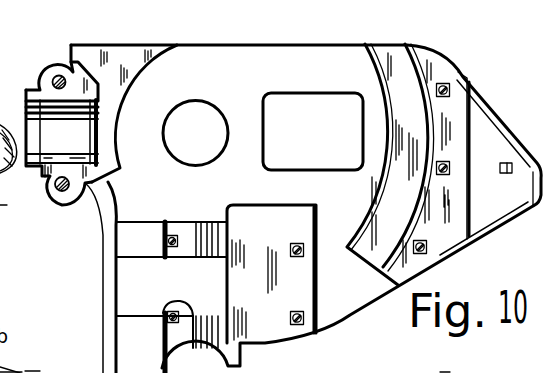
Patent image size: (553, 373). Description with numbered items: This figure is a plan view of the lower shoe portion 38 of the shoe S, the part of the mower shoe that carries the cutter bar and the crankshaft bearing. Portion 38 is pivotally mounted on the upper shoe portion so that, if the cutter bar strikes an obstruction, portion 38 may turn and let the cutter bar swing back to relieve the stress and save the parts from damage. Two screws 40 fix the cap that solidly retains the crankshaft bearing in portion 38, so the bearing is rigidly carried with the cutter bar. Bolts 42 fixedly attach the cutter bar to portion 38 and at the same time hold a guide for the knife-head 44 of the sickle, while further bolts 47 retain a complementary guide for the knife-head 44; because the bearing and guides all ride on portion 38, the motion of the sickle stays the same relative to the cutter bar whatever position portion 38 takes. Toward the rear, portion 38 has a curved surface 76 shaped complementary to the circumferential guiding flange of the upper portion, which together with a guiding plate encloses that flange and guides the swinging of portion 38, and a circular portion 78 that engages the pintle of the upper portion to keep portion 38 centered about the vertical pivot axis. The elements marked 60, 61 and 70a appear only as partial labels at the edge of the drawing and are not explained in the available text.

The lower shoe portion 38 is at (345, 322).
The screws 40 is at (54, 77).
The bolts 42 is at (175, 249).
The knife-head 44 is at (437, 370).
The bolts 47 is at (307, 253).
The lever 60 is at (13, 363).
The link 61 is at (30, 367).
The arm 70a is at (37, 372).
The surface 76 is at (416, 185).
The portion engaging pintle 78 is at (213, 156).
The shoe S is at (0, 298).